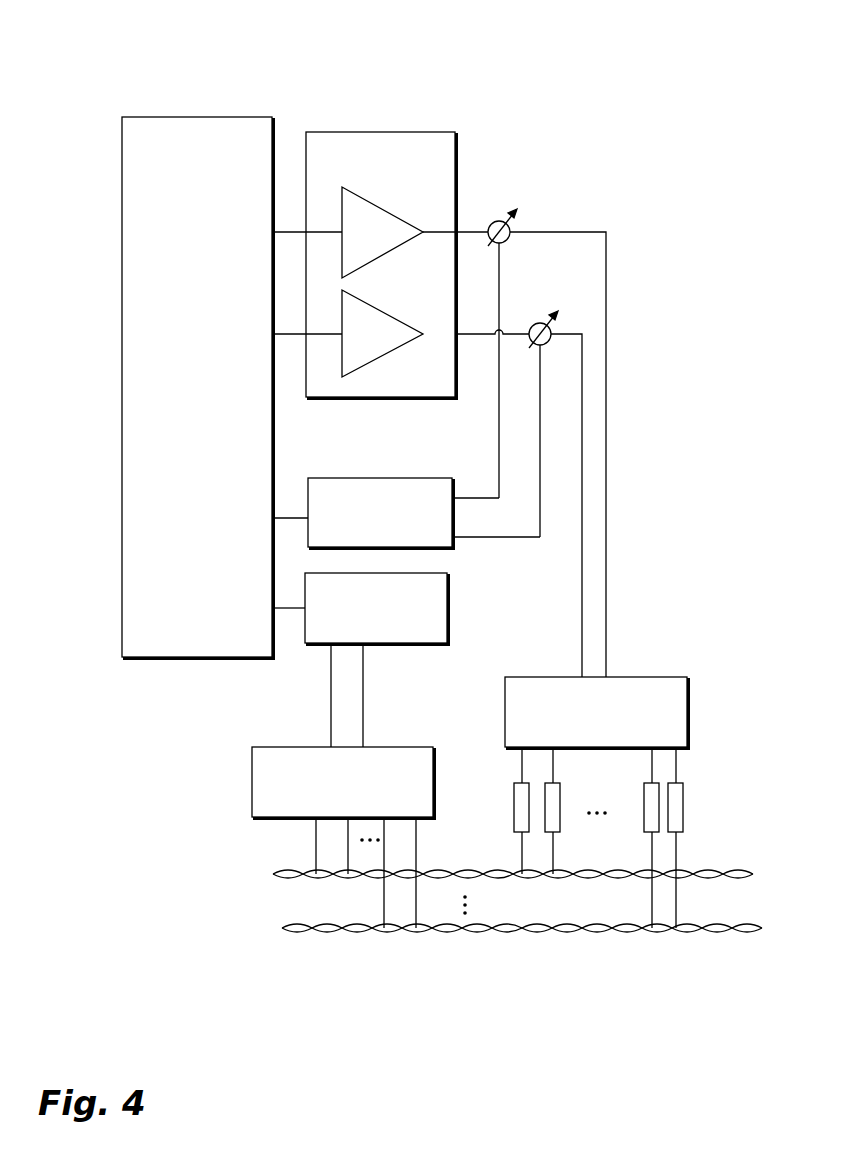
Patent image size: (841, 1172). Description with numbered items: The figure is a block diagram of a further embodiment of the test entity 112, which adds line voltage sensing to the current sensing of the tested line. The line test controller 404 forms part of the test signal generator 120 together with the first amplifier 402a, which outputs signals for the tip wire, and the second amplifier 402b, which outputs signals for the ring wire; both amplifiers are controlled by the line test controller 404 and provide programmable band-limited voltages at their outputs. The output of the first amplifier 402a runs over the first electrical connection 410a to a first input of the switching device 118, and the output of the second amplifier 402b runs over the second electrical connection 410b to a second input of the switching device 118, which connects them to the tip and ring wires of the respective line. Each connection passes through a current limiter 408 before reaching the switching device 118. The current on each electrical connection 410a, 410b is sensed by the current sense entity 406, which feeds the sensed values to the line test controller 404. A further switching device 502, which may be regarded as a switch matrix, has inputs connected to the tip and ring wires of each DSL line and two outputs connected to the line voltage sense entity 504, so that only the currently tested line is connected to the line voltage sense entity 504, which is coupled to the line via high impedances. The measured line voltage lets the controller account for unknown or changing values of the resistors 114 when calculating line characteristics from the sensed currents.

The test entity 112 is at (183, 64).
The line test controller 404 is at (118, 138).
The test signal generator 120 is at (345, 130).
The first amplifier 402a is at (342, 187).
The second amplifier 402b is at (378, 365).
The current limiter 408 is at (497, 220).
The first electrical connection 410a is at (585, 231).
The second electrical connection 410b is at (568, 333).
The current sense entity 406 is at (355, 477).
The line voltage sense entity 504 is at (450, 582).
The switching device 502 is at (417, 747).
The switching device 118 is at (650, 673).
The resistors 114 is at (683, 782).